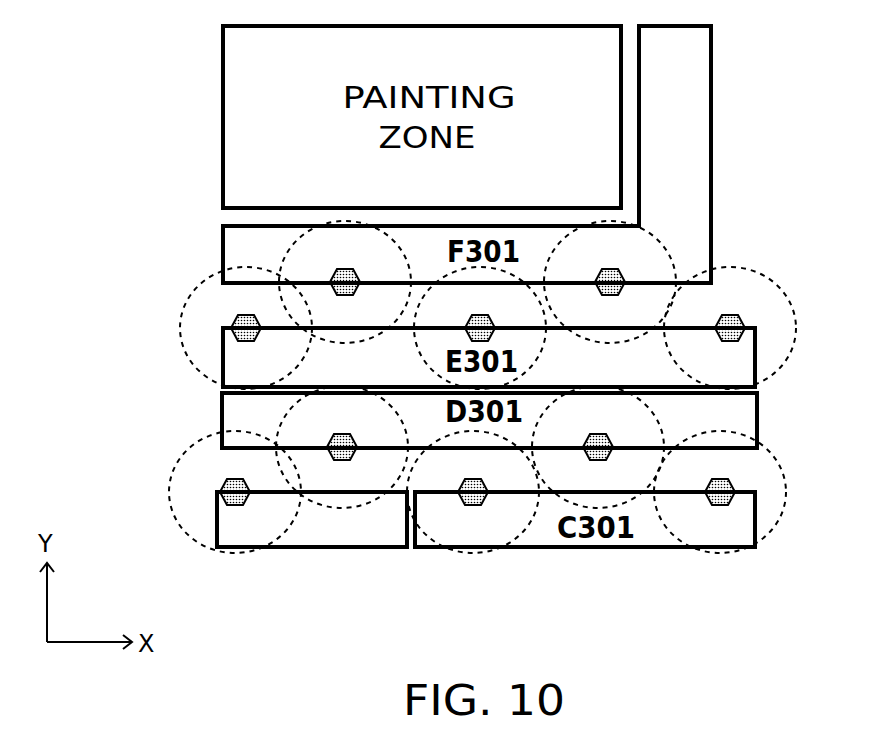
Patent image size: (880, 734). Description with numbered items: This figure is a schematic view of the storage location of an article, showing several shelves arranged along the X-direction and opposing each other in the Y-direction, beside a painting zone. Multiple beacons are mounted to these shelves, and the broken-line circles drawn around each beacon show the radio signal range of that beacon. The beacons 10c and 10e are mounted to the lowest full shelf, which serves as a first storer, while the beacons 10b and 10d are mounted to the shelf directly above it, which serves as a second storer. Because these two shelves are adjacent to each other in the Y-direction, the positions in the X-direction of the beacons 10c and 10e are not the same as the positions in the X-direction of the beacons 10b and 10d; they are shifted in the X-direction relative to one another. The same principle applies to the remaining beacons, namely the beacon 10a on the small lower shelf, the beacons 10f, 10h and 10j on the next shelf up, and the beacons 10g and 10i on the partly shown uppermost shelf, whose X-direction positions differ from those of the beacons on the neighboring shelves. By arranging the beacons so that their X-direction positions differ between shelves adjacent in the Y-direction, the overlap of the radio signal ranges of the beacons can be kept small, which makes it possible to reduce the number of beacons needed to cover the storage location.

The beacon 10a is at (222, 488).
The beacon 10b is at (330, 444).
The beacon 10c is at (472, 504).
The beacon 10d is at (611, 440).
The beacon 10e is at (736, 490).
The beacon 10f is at (233, 326).
The beacon 10g is at (333, 280).
The beacon 10h is at (494, 316).
The beacon 10i is at (624, 286).
The beacon 10j is at (746, 327).